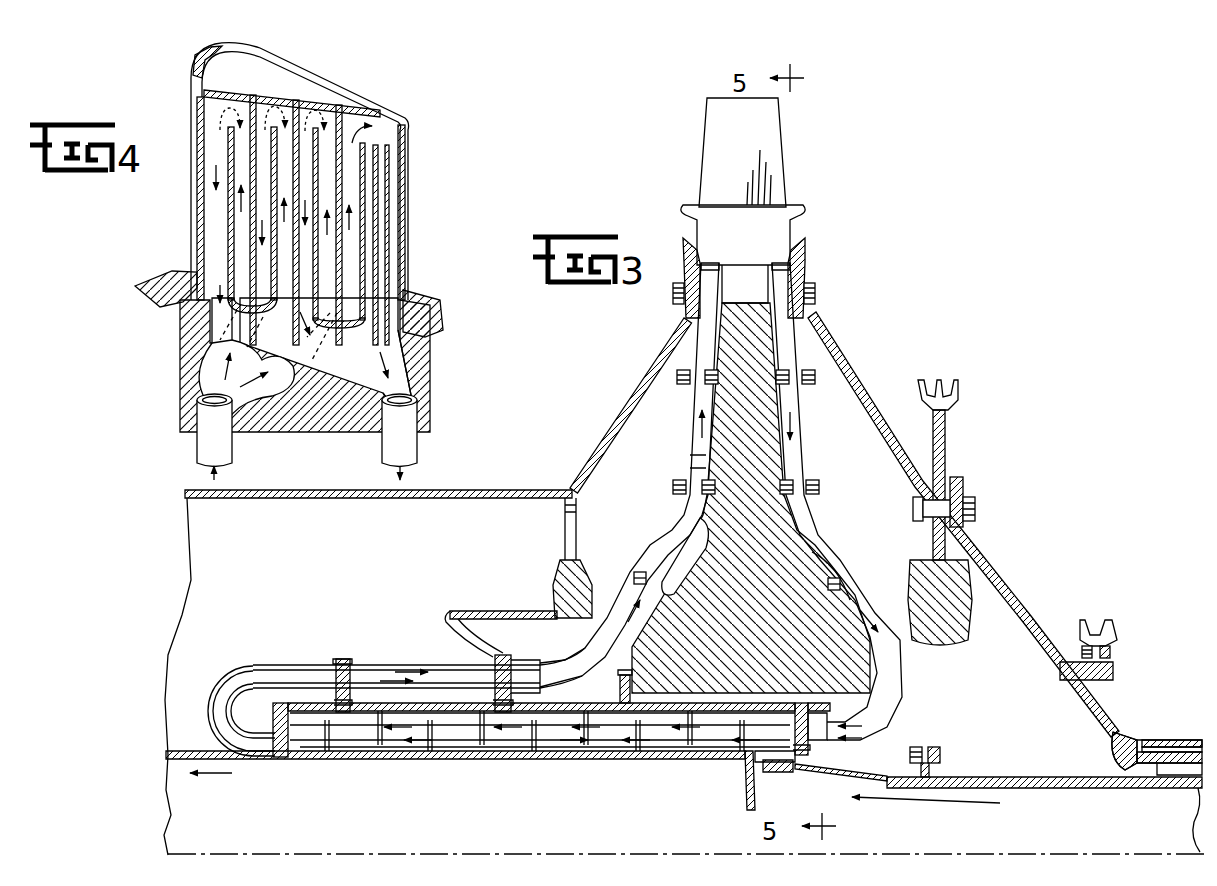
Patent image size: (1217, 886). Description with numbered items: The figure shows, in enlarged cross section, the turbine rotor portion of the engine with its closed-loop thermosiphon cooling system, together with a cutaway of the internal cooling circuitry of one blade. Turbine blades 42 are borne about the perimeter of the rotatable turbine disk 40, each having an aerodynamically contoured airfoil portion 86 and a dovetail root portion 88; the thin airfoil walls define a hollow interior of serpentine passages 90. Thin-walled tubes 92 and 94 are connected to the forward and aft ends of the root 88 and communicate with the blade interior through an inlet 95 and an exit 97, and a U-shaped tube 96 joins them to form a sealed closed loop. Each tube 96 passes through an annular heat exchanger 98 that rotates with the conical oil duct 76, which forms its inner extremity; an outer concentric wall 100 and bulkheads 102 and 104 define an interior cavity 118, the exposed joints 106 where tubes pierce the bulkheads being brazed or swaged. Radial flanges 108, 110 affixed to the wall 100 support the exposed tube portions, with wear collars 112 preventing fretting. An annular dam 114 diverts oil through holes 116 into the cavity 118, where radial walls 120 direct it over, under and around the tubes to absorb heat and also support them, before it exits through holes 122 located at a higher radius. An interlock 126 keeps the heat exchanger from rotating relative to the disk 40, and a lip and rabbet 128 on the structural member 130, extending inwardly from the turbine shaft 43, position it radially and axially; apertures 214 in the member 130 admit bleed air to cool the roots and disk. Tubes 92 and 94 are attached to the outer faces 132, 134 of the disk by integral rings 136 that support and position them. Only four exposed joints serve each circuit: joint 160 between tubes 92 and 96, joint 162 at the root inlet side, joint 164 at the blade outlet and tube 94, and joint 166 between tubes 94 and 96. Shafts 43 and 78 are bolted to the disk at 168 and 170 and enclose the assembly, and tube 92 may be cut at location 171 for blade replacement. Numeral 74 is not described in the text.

In FIG. 3, the turbine disk 40 is at (805, 561).
In FIG. 4, the turbine blade 42 is at (416, 168).
In FIG. 3, the turbine blade 42 is at (790, 170).
In FIG. 3, the turbine shaft 43 is at (312, 500).
In FIG. 3, the turbine rotor shaft region 74 is at (528, 805).
In FIG. 3, the oil duct 76 is at (234, 765).
In FIG. 3, the shaft 78 is at (853, 391).
In FIG. 4, the airfoil portion 86 is at (190, 92).
In FIG. 4, the root portion 88 is at (428, 370).
In FIG. 4, the serpentine passages 90 is at (232, 140).
In FIG. 4, the tube 92 is at (197, 442).
In FIG. 3, the tube 92 is at (688, 418).
In FIG. 4, the tube 94 is at (417, 452).
In FIG. 3, the tube 94 is at (800, 410).
In FIG. 4, the inlet 95 is at (215, 385).
In FIG. 3, the U-shaped tube 96 is at (405, 666).
In FIG. 4, the exit 97 is at (403, 390).
In FIG. 3, the heat exchanger 98 is at (497, 762).
In FIG. 3, the outer concentric wall 100 is at (440, 704).
In FIG. 3, the bulkhead 102 is at (250, 706).
In FIG. 3, the bulkhead 104 is at (808, 713).
In FIG. 3, the joint 106 is at (260, 735).
In FIG. 3, the radial flange 108 is at (338, 659).
In FIG. 3, the radial flange 110 is at (525, 663).
In FIG. 3, the wear collar 112 is at (347, 659).
In FIG. 3, the annular dam 114 is at (745, 795).
In FIG. 3, the hole 116 is at (765, 782).
In FIG. 3, the interior cavity 118 is at (760, 756).
In FIG. 3, the radial wall 120 is at (360, 758).
In FIG. 3, the hole 122 is at (300, 760).
In FIG. 3, the interlock 126 is at (618, 681).
In FIG. 3, the lip and rabbet 128 is at (497, 646).
In FIG. 3, the structural member 130 is at (556, 590).
In FIG. 3, the outer face 132 is at (676, 553).
In FIG. 3, the outer face 134 is at (812, 540).
In FIG. 3, the ring 136 is at (802, 384).
In FIG. 3, the joint 160 is at (560, 664).
In FIG. 4, the joint 162 is at (238, 432).
In FIG. 3, the joint 162 is at (712, 266).
In FIG. 4, the joint 164 is at (417, 430).
In FIG. 3, the joint 164 is at (796, 270).
In FIG. 3, the joint 166 is at (872, 742).
In FIG. 3, the bolt location 168 is at (676, 300).
In FIG. 3, the bolt location 170 is at (814, 293).
In FIG. 3, the cut location 171 is at (690, 462).
In FIG. 3, the aperture 214 is at (565, 530).